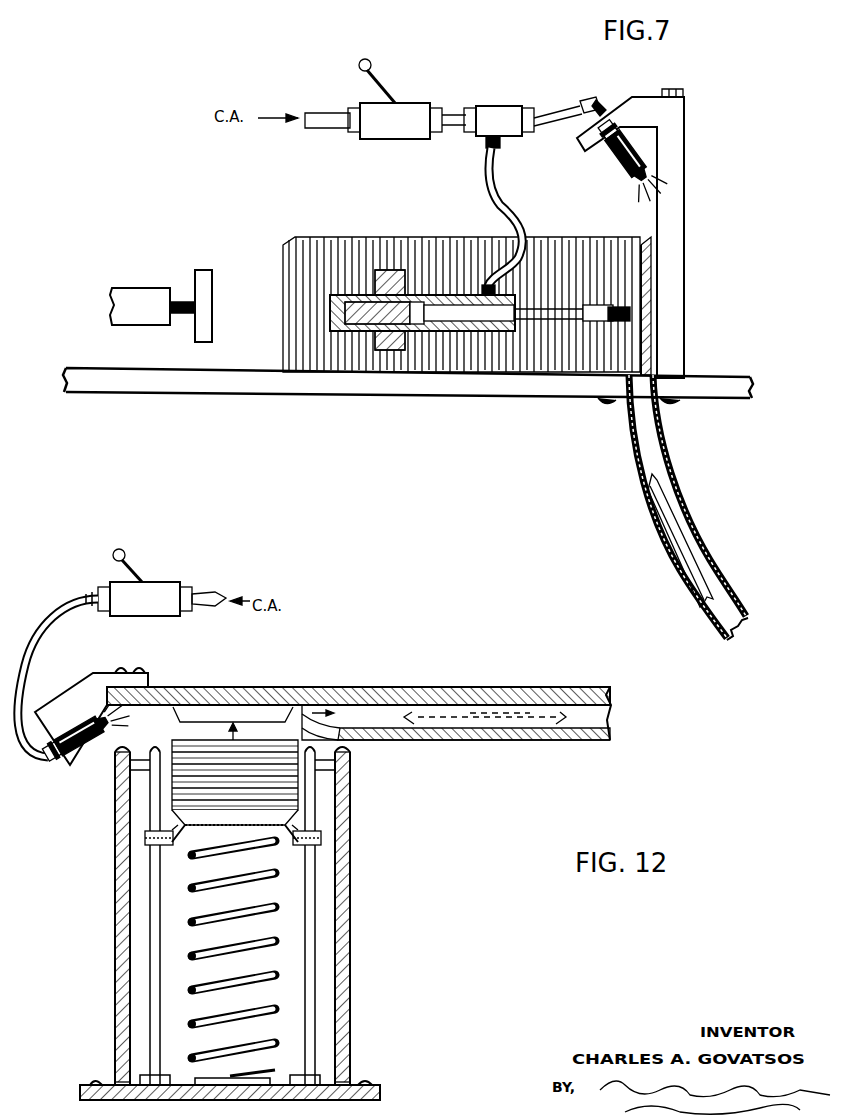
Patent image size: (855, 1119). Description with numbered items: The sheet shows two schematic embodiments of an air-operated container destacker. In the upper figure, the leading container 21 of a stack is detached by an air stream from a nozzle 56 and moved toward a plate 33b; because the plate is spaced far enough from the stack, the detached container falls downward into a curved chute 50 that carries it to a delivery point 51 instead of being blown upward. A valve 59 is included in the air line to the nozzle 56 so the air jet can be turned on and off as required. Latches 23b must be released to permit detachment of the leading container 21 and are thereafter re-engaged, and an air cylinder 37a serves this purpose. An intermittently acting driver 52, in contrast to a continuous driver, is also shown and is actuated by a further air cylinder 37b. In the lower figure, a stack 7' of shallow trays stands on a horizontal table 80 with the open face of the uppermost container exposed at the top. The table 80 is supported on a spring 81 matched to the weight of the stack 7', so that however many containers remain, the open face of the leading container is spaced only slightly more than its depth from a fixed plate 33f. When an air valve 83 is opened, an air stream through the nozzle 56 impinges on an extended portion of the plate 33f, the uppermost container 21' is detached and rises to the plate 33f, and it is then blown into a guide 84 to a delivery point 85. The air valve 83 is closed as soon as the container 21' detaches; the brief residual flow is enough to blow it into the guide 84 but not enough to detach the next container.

In FIG. 7, the valve 59 is at (407, 130).
In FIG. 7, the nozzle 56 is at (616, 168).
In FIG. 12, the nozzle 56 is at (78, 716).
In FIG. 7, the plate 33b is at (670, 274).
In FIG. 7, the air cylinder 37a is at (470, 332).
In FIG. 7, the air cylinder 37b is at (142, 300).
In FIG. 7, the intermittently acting driver 52 is at (206, 292).
In FIG. 7, the latches 23b is at (610, 325).
In FIG. 7, the leading container 21 is at (678, 428).
In FIG. 12, the leading container 21 is at (237, 690).
In FIG. 7, the curved chute 50 is at (648, 443).
In FIG. 7, the delivery point 51 is at (744, 630).
In FIG. 12, the air valve 83 is at (158, 610).
In FIG. 12, the fixed plate 33f is at (250, 690).
In FIG. 12, the guide 84 is at (385, 720).
In FIG. 12, the uppermost container 21' is at (500, 688).
In FIG. 12, the delivery point 85 is at (613, 718).
In FIG. 12, the stack 7' is at (188, 787).
In FIG. 12, the horizontal table 80 is at (280, 840).
In FIG. 12, the spring 81 is at (275, 873).